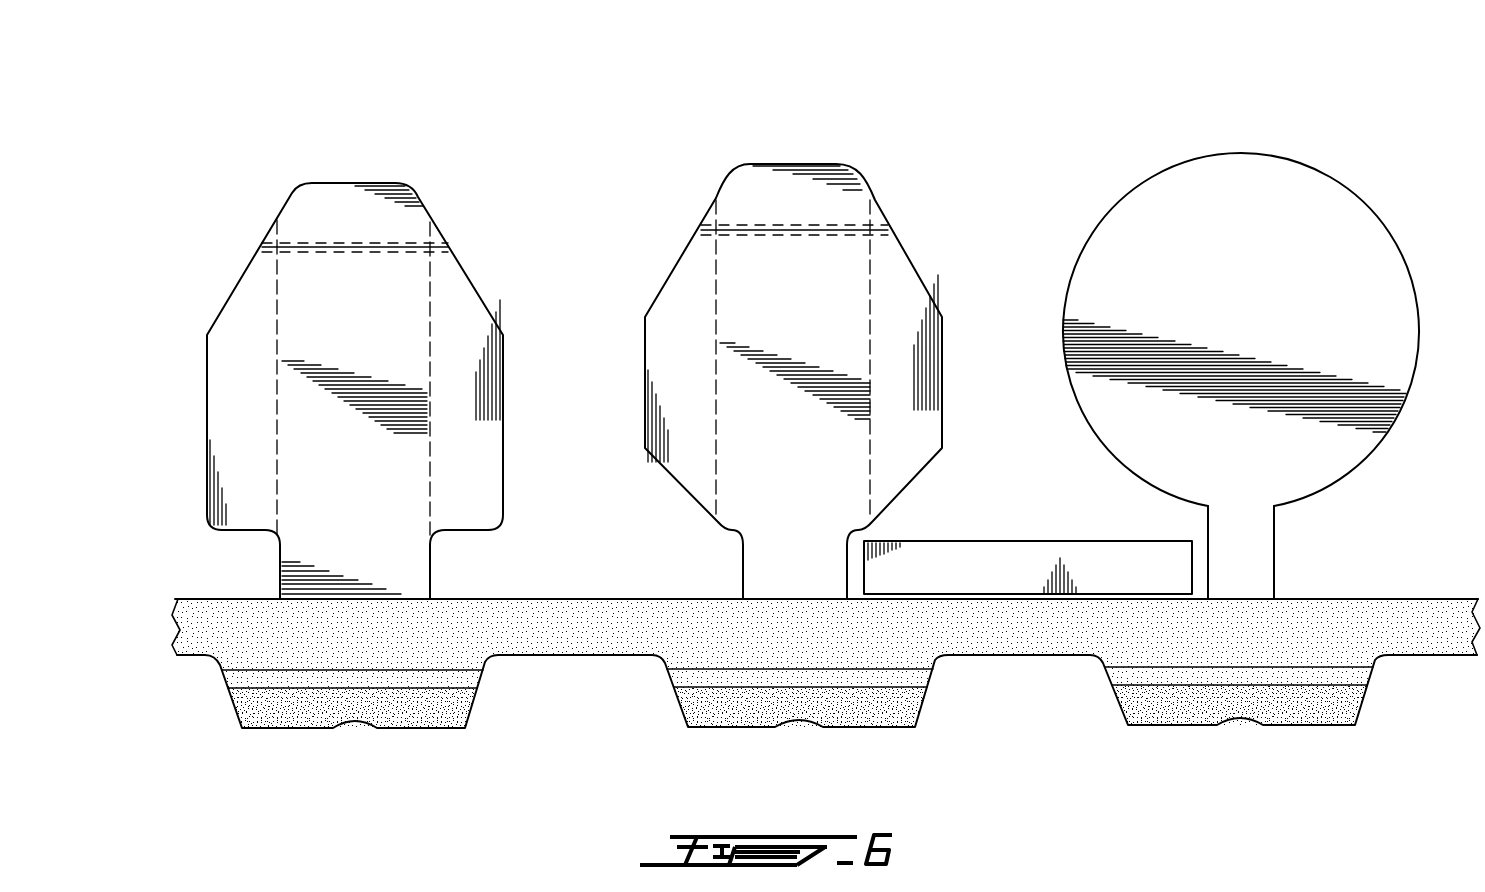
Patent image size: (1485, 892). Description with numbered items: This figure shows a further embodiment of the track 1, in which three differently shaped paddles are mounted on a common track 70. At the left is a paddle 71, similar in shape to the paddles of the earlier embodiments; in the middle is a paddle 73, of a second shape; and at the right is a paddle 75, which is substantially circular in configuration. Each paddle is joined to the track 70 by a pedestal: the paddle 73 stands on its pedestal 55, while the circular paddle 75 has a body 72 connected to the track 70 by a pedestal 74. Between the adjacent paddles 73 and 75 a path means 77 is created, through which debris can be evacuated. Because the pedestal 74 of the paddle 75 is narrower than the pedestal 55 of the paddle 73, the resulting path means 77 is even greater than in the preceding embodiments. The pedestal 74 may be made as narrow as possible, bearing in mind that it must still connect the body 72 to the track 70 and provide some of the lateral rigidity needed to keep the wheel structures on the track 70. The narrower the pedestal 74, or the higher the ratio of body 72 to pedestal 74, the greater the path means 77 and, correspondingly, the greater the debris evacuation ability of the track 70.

The track 1 is at (1416, 140).
The pedestal 55 is at (793, 578).
The track 70 is at (1438, 630).
The paddle 71 is at (368, 202).
The body 72 is at (1240, 263).
The paddle 73 is at (805, 187).
The pedestal 74 is at (1252, 568).
The paddle 75 is at (1241, 295).
The path means 77 is at (1022, 552).